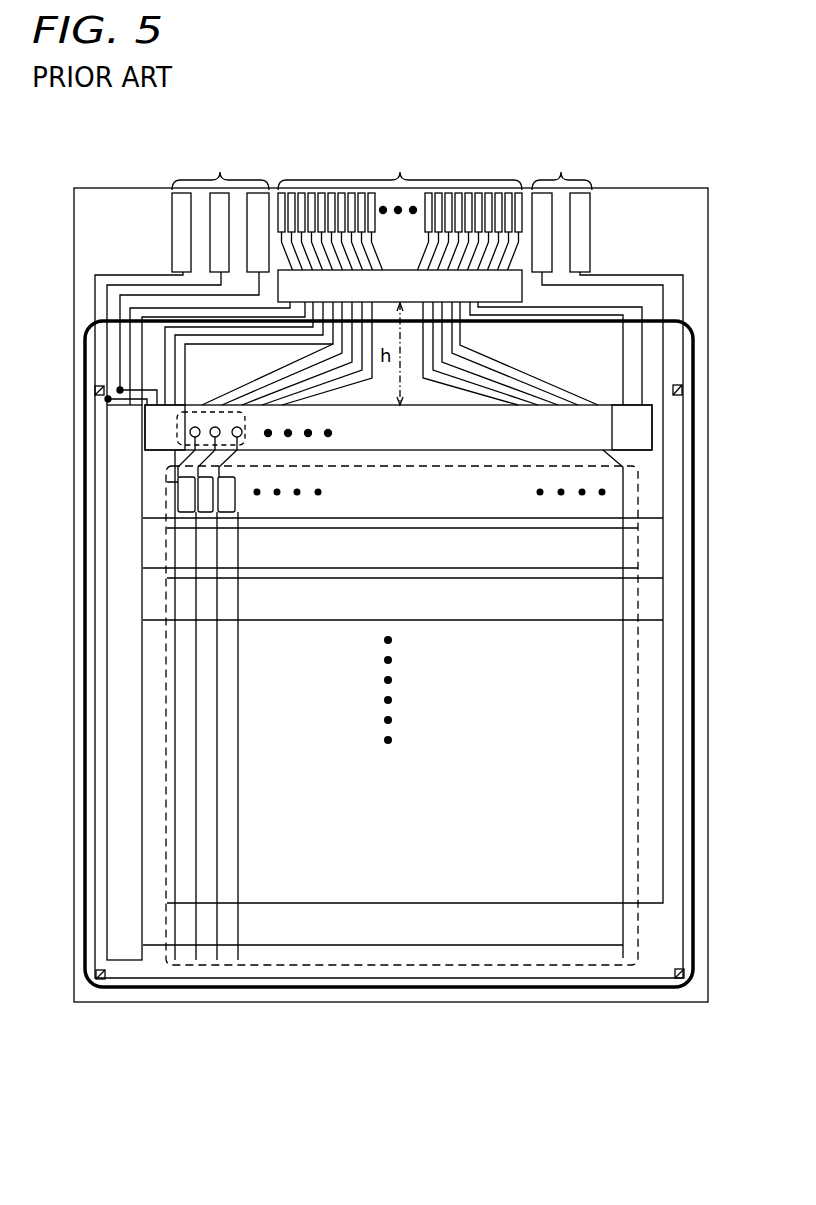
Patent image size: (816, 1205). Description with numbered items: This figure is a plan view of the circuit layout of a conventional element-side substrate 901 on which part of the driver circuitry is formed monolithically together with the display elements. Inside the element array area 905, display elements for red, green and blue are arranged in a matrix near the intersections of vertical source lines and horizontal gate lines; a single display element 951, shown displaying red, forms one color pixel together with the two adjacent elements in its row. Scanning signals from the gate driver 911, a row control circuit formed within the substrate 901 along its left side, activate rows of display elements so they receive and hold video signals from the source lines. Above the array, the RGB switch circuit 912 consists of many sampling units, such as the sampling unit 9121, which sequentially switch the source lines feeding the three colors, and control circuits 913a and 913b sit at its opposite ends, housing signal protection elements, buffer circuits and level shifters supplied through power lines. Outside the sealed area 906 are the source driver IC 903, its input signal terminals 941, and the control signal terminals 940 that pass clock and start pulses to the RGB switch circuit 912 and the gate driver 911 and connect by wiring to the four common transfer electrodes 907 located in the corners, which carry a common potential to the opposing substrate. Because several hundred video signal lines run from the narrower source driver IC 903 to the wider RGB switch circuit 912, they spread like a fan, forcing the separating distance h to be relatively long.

The element-side substrate 901 is at (693, 188).
The source driver IC 903 is at (399, 270).
The element array area 905 is at (402, 756).
The sealed area 906 is at (419, 654).
The common transfer electrodes 907 is at (389, 721).
The gate driver 911 is at (87, 682).
The RGB switch circuit 912 is at (405, 453).
The sampling unit 9121 is at (201, 404).
The control circuit 913a is at (103, 466).
The control circuit 913b is at (690, 466).
The control signal terminals 940 is at (382, 208).
The input signal terminals 941 is at (400, 204).
The display element 951 is at (233, 515).